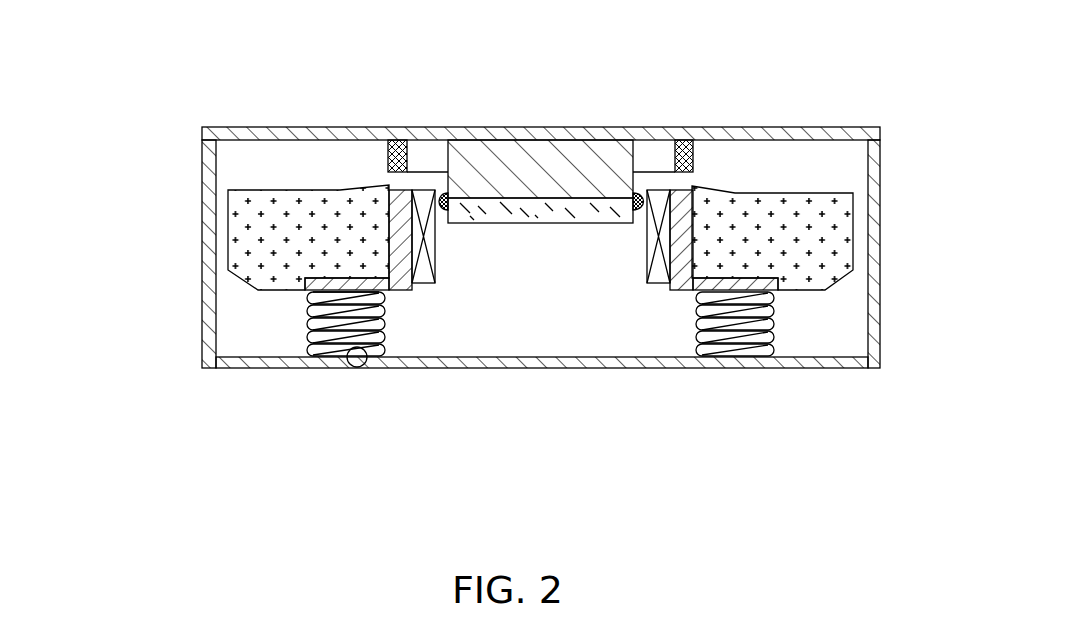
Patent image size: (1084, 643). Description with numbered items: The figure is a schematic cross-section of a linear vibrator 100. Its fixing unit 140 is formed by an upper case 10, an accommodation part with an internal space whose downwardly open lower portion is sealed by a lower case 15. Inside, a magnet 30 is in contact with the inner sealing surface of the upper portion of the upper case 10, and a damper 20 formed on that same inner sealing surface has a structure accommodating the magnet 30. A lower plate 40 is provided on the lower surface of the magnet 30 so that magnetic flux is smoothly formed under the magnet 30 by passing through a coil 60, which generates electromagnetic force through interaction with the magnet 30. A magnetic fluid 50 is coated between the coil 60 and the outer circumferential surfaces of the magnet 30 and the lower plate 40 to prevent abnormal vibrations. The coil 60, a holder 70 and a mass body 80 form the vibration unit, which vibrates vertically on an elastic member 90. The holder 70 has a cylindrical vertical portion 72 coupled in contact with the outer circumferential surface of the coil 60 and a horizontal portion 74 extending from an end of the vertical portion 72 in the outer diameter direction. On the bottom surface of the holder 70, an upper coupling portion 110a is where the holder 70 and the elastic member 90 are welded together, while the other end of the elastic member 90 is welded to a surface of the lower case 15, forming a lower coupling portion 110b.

The linear vibrator 100 is at (565, 27).
The upper case 10 is at (203, 250).
The lower case 15 is at (229, 367).
The damper 20 is at (388, 157).
The magnet 30 is at (570, 160).
The lower plate 40 is at (478, 210).
The magnetic fluid 50 is at (440, 196).
The coil 60 is at (420, 275).
The holder 70 is at (678, 483).
The vertical portion 72 is at (673, 241).
The horizontal portion 74 is at (703, 285).
The mass body 80 is at (848, 211).
The elastic member 90 is at (707, 336).
The upper coupling portion 110a is at (354, 288).
The lower coupling portion 110b is at (360, 363).
The fixing unit 140 is at (159, 437).